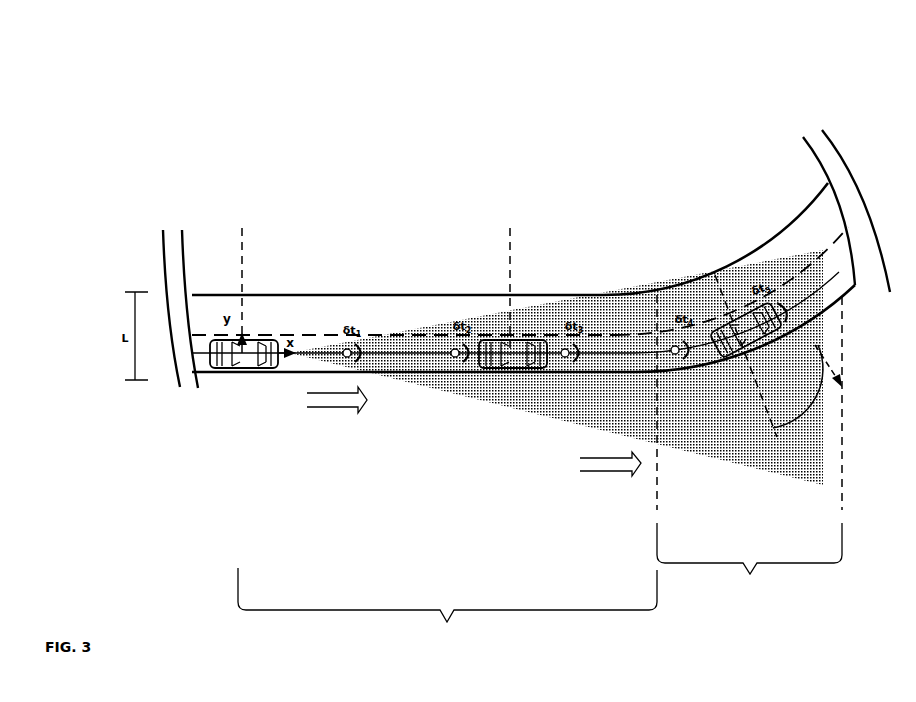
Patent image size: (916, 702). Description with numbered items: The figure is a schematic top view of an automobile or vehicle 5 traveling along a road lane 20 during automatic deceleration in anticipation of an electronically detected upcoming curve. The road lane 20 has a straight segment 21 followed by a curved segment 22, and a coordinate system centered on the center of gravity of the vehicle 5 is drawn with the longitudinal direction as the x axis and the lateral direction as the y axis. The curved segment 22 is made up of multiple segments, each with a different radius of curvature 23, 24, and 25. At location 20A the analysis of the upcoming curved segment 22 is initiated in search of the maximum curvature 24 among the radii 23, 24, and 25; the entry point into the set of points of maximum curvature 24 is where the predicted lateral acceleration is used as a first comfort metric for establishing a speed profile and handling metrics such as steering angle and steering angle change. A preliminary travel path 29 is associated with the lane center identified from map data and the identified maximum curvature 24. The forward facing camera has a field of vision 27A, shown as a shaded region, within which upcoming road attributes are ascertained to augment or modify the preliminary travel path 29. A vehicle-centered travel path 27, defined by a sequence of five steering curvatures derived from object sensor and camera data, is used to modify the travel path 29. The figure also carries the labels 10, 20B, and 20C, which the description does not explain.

The vehicle 5 is at (496, 335).
The road 10 is at (526, 289).
The road lane 20 is at (338, 189).
The location 20A is at (245, 271).
The second position 20B is at (510, 275).
The third position in curve 20C is at (778, 356).
The straight segment 21 is at (447, 610).
The curved segment 22 is at (749, 448).
The radius of curvature 23 is at (682, 274).
The maximum curvature 24 is at (704, 264).
The radius of curvature 25 is at (759, 232).
The vehicle-centered travel path 27 is at (383, 355).
The field of vision 27A is at (556, 367).
The preliminary travel path 29 is at (820, 262).